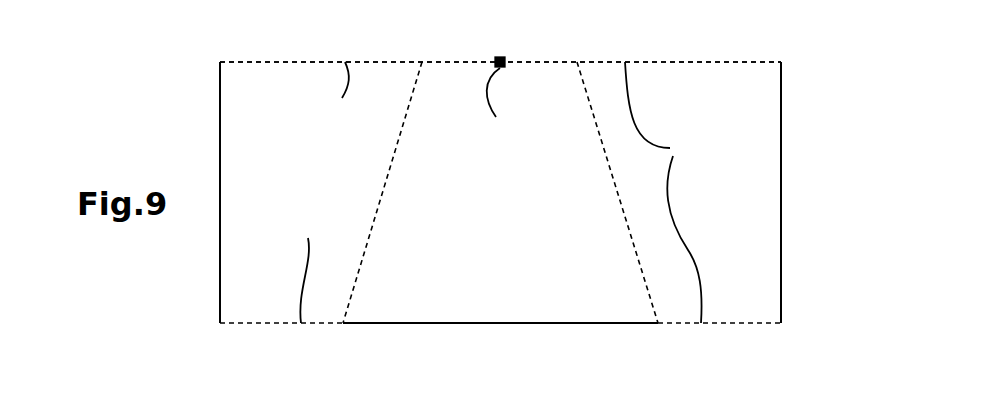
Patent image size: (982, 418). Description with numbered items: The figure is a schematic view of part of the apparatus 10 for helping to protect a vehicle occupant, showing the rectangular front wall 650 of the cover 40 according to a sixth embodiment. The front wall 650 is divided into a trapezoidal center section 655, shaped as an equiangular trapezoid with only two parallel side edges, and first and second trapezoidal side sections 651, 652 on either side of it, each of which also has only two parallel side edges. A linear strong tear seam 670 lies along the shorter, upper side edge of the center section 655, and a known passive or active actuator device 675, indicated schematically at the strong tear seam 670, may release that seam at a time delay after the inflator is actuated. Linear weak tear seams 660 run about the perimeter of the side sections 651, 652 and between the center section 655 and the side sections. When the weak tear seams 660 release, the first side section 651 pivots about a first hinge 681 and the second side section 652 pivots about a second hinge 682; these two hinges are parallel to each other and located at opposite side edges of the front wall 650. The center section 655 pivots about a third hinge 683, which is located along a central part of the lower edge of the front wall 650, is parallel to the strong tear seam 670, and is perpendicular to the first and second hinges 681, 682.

The apparatus 10 is at (793, 36).
The cover 40 is at (808, 78).
The front wall 650 is at (203, 66).
The first side section 651 is at (279, 340).
The second side section 652 is at (735, 345).
The center section 655 is at (520, 338).
The weak tear seams 660 is at (398, 136).
The strong tear seam 670 is at (467, 62).
The actuator device 675 is at (512, 103).
The first hinge 681 is at (220, 225).
The second hinge 682 is at (781, 173).
The third hinge 683 is at (461, 323).